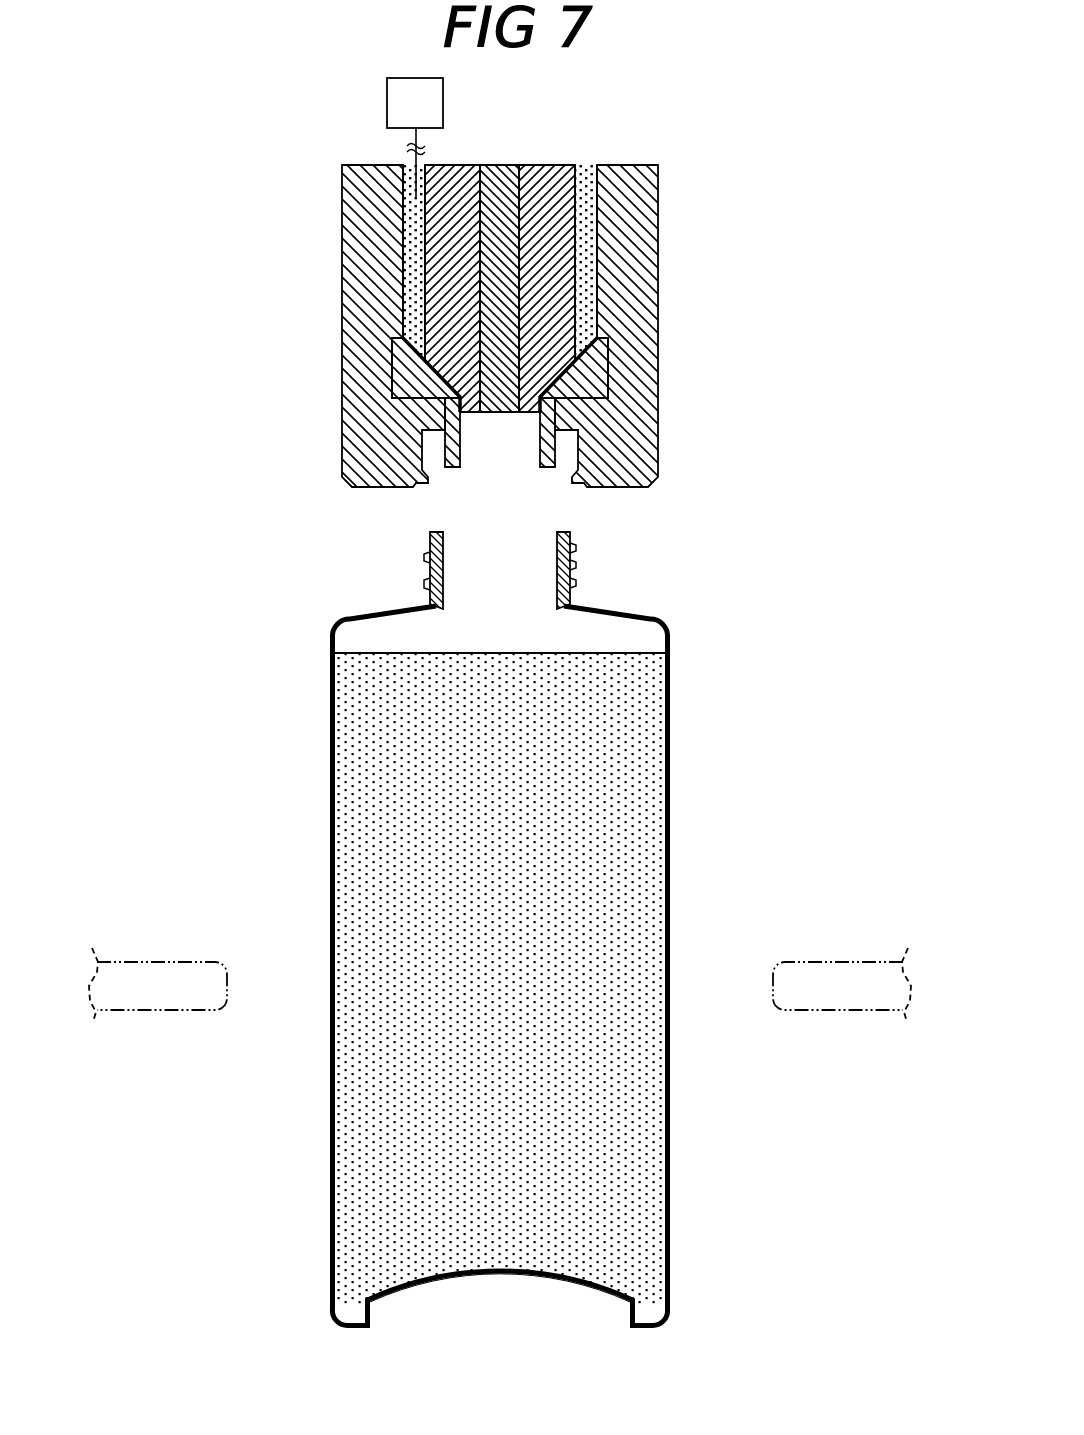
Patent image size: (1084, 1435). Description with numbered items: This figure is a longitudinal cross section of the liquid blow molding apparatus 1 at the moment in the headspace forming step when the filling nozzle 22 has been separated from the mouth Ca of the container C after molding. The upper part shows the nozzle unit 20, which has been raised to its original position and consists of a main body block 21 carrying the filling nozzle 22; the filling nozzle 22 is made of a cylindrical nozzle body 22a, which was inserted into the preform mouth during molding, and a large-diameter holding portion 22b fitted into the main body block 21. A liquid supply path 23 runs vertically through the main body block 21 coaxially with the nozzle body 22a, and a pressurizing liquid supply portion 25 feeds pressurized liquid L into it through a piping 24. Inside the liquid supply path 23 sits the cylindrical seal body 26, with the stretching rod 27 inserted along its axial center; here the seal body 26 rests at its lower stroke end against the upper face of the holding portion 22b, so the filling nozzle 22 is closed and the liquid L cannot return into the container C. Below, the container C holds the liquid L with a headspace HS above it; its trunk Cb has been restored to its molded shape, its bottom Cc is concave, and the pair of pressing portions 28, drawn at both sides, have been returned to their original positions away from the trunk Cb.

The liquid blow molding apparatus 1 is at (723, 228).
The nozzle unit 20 is at (658, 205).
The main body block 21 is at (638, 276).
The filling nozzle 22 is at (499, 402).
The nozzle body 22a is at (450, 437).
The holding portion 22b is at (400, 373).
The liquid supply path 23 is at (415, 290).
The piping 24 is at (412, 143).
The pressurizing liquid supply portion 25 is at (445, 100).
The seal body 26 is at (450, 247).
The stretching rod 27 is at (499, 185).
The pressing portions 28 is at (151, 986).
The container C is at (670, 717).
The mouth Ca is at (563, 553).
The trunk Cb is at (667, 775).
The bottom Cc is at (538, 1282).
The headspace HS is at (505, 610).
The liquid L is at (590, 310).